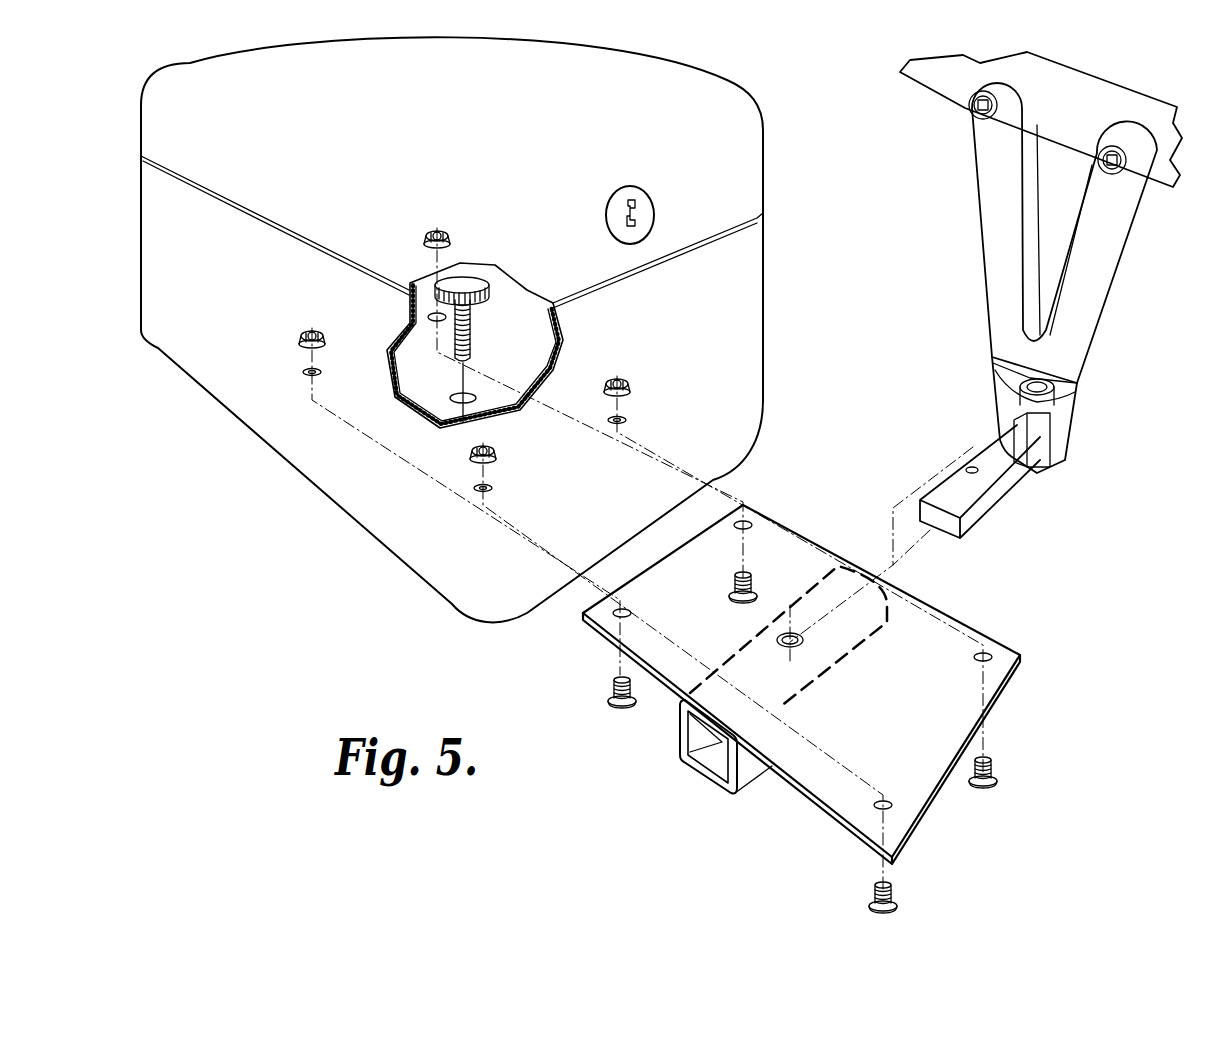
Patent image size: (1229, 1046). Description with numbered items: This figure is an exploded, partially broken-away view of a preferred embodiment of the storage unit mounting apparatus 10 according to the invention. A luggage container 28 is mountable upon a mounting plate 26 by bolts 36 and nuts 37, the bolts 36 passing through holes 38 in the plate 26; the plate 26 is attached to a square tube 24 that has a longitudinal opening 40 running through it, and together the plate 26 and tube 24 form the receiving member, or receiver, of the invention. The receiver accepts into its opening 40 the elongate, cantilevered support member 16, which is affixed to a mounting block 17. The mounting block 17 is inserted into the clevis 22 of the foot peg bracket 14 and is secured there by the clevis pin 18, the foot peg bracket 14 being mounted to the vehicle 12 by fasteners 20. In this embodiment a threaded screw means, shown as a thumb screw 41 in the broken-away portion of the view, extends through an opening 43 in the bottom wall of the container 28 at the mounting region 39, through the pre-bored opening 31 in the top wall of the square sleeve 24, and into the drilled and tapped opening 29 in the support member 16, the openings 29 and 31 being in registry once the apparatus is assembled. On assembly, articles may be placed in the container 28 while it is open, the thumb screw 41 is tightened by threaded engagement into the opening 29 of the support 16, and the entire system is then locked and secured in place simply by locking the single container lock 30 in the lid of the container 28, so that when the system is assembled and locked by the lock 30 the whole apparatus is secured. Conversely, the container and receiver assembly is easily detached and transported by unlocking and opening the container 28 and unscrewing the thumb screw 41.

The hitch mounted storage assembly 10 is at (345, 638).
The vehicle 12 is at (1025, 63).
The foot peg bracket 14 is at (1005, 237).
The elongate cantilevered support member 16 is at (1026, 466).
The mounting block 17 is at (1065, 432).
The clevis pin 18 is at (993, 342).
The bolts 20 is at (975, 100).
The clevis 22 is at (1070, 395).
The square tube 24 is at (739, 778).
The mounting plate 26 is at (930, 637).
The luggage container 28 is at (665, 100).
The drilled and tapped opening 29 is at (970, 462).
The container lock 30 is at (645, 210).
The pre-bored opening 31 is at (815, 640).
The bolts 36 is at (757, 572).
The nuts 37 is at (450, 225).
The holes 38 is at (737, 527).
The mounting plate 39 is at (405, 320).
The longitudinal opening 40 is at (722, 742).
The thumb screw 41 is at (470, 322).
The opening 43 is at (450, 398).